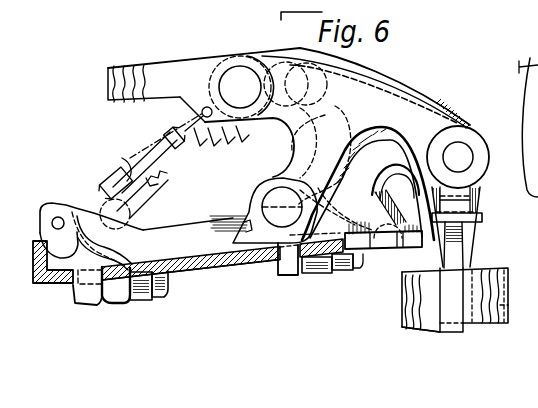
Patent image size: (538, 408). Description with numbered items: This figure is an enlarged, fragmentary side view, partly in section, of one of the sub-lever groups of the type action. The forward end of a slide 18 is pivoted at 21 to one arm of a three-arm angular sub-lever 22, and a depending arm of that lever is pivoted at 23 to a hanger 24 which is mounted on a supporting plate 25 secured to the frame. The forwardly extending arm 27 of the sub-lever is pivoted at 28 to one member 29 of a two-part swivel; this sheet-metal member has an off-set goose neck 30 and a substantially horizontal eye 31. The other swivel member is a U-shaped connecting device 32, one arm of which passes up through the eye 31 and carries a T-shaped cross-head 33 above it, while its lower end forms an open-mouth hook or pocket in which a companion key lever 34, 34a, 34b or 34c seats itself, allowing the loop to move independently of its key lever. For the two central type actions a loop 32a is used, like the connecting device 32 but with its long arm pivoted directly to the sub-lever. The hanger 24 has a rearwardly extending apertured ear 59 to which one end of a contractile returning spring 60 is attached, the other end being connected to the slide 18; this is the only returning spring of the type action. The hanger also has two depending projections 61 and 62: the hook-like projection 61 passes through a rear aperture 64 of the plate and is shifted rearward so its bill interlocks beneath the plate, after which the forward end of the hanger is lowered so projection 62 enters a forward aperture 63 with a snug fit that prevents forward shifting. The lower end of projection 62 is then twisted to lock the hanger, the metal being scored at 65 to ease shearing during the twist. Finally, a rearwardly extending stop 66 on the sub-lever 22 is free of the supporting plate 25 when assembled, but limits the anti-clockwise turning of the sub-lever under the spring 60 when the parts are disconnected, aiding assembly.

The slide 18 is at (150, 68).
The pivot 21 is at (241, 87).
The three-arm angular sub-lever 22 is at (323, 62).
The pivot 23 is at (273, 198).
The hanger 24 is at (399, 247).
The supporting plate 25 is at (210, 264).
The forwardly extending arm 27 is at (410, 127).
The pivot 28 is at (458, 157).
The swivel member 29 is at (487, 158).
The goose neck 30 is at (466, 208).
The eye 31 is at (479, 219).
The U-shaped connecting device 32 is at (448, 293).
The loop 32a is at (440, 233).
The T-shaped cross-head 33 is at (437, 212).
The key lever 34 is at (477, 273).
The key lever 34a is at (497, 280).
The key lever 34b is at (500, 278).
The key lever 34c is at (505, 295).
The apertured ear 59 is at (75, 202).
The contractile returning spring 60 is at (122, 160).
The hook-like projection 61 is at (76, 297).
The depending projection 62 is at (282, 274).
The forward aperture 63 is at (270, 239).
The rear aperture 64 is at (130, 257).
The score 65 is at (276, 263).
The stop 66 is at (246, 217).